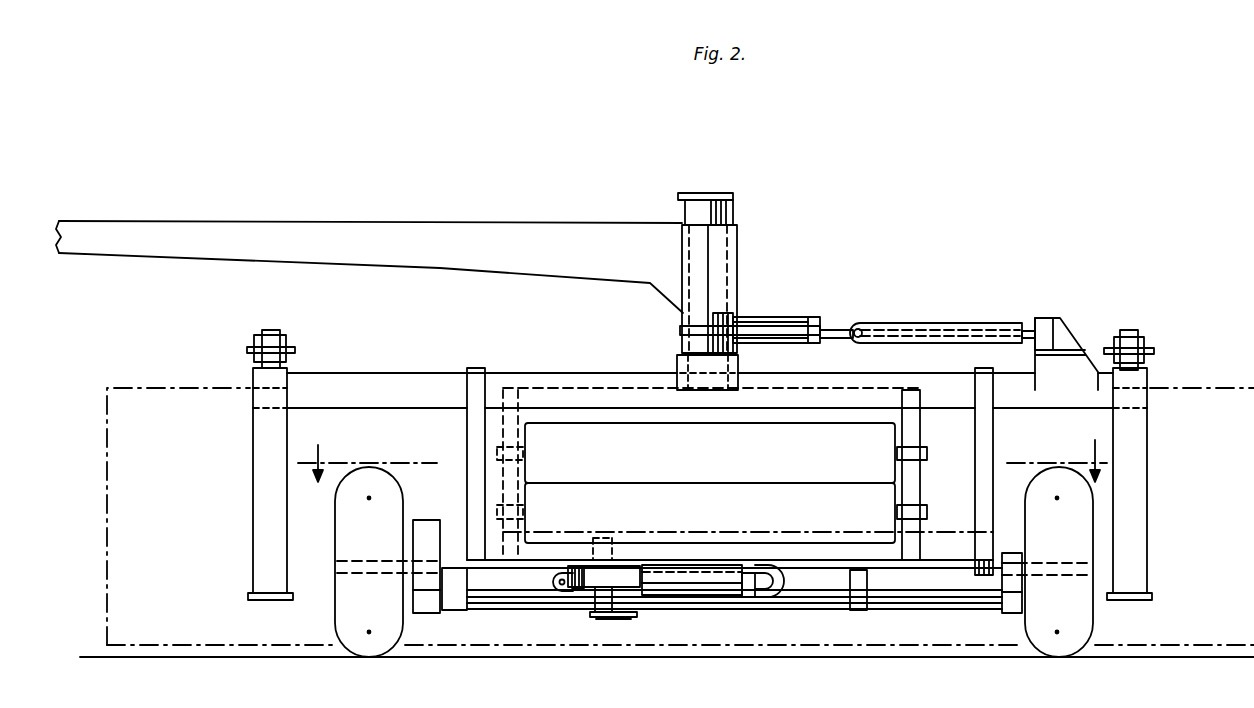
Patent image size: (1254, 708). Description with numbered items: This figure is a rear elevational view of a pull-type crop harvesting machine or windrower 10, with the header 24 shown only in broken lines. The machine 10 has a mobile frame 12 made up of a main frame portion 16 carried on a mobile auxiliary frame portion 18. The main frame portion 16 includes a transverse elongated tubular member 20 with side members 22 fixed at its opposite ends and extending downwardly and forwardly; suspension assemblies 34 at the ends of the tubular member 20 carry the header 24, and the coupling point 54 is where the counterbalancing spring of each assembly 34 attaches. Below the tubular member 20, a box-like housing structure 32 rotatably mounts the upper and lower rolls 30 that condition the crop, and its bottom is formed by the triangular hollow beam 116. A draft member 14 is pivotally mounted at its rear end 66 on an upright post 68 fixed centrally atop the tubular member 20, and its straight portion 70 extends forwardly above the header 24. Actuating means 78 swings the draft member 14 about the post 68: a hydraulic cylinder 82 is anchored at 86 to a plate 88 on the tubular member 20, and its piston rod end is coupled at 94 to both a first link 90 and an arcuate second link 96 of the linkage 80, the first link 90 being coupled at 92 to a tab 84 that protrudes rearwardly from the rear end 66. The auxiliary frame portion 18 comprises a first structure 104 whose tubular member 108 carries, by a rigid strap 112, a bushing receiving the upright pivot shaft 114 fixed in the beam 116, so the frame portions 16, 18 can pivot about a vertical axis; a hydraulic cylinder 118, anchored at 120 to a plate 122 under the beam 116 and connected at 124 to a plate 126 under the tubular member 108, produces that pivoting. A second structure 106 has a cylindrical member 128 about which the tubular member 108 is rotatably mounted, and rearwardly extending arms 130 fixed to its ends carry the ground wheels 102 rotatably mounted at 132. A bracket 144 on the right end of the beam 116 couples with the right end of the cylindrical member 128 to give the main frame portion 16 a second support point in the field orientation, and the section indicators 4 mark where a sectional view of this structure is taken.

The section line 4- 4 is at (702, 450).
The crop harvesting machine 10 is at (862, 185).
The mobile frame 12 is at (623, 353).
The draft member 14 is at (369, 240).
The main frame portion 16 is at (448, 372).
The mobile auxiliary frame portion 18 is at (508, 611).
The elongated tubular member 20 is at (330, 373).
The side members 22 is at (253, 503).
The header 24 is at (190, 386).
The rolls 30 is at (705, 461).
The box-like housing structure 32 is at (998, 448).
The suspension assemblies 34 is at (263, 323).
The spring coupling location 54 is at (247, 350).
The rear end of draft member 66 is at (734, 262).
The upright post 68 is at (735, 210).
The straight portion of draft member 70 is at (422, 269).
The actuating means 78 is at (879, 322).
The linkage 80 is at (792, 342).
The hydraulic cylinder 82 is at (950, 323).
The tab 84 is at (678, 330).
The cylinder end pivot 86 is at (1047, 318).
The plate 88 is at (1072, 335).
The first link 90 is at (768, 338).
The first link to tab pivot 92 is at (728, 330).
The piston rod end pivot 94 is at (851, 338).
The second link 96 is at (780, 316).
The ground wheels 102 is at (335, 600).
The first structure 104 is at (526, 610).
The second structure 106 is at (940, 612).
The tubular member of first structure 108 is at (746, 604).
The rigid strap 112 is at (625, 614).
The upright pivot shaft 114 is at (603, 540).
The hollow beam 116 is at (943, 532).
The hydraulic cylinder 118 is at (678, 596).
The cylinder end anchor 120 is at (750, 598).
The plate 122 is at (792, 581).
The piston rod end connection 124 is at (578, 570).
The plate 126 is at (552, 582).
The cylindrical member 128 is at (897, 606).
The arms 130 is at (427, 613).
The wheel mounting 132 is at (421, 560).
The bracket 144 is at (975, 578).